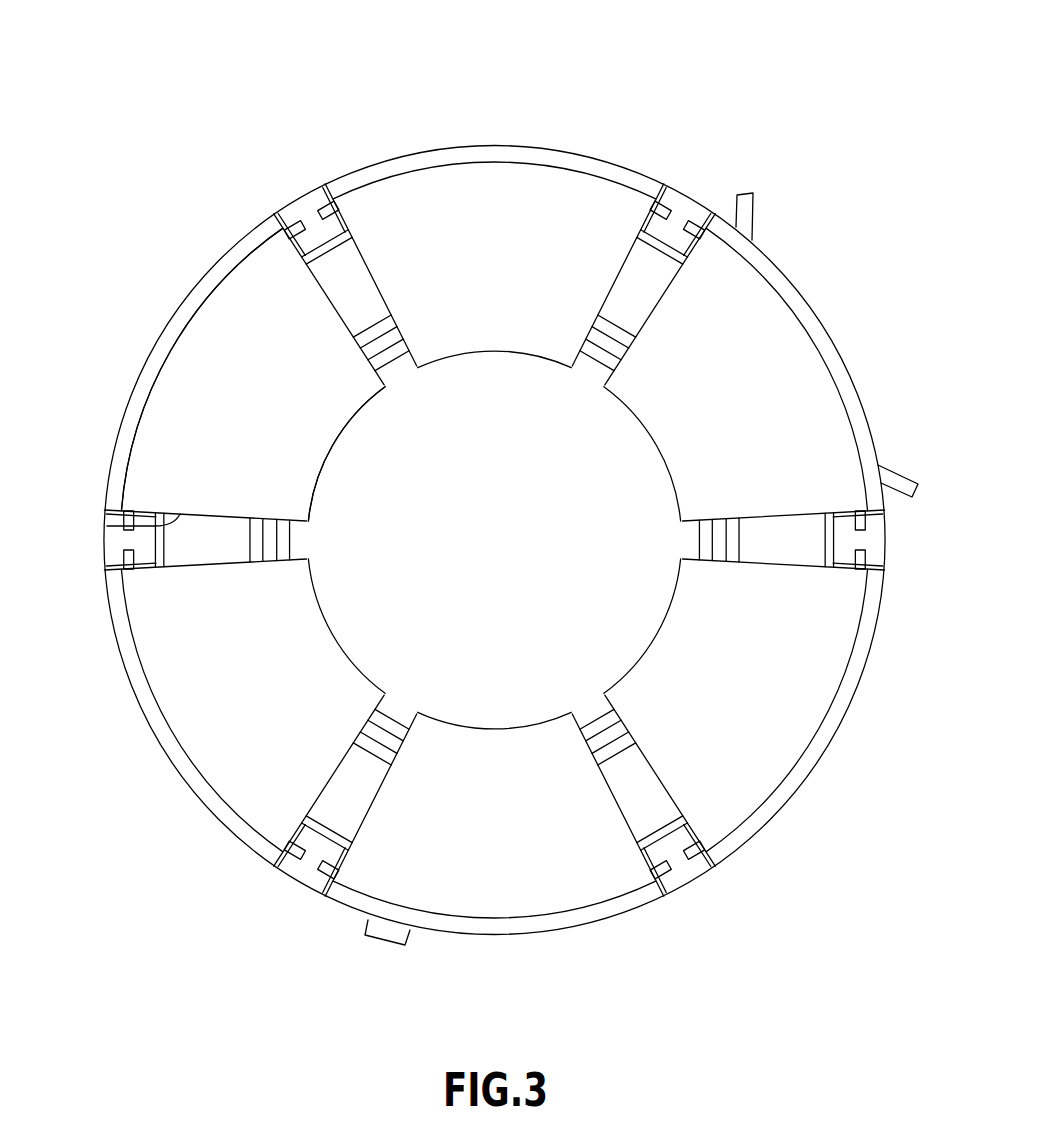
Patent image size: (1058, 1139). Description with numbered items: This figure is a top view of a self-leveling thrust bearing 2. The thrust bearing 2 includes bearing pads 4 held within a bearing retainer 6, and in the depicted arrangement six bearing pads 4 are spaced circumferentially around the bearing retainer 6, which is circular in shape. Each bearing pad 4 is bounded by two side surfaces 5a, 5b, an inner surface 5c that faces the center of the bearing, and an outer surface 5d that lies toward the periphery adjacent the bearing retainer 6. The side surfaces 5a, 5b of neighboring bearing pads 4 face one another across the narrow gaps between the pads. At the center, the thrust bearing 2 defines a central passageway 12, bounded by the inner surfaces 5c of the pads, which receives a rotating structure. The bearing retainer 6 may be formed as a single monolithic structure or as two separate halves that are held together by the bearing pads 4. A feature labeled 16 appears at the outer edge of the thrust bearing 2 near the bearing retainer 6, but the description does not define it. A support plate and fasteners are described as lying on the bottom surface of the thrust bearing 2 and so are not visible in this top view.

The self-leveling thrust bearing 2 is at (597, 69).
The bearing pad 4 is at (183, 394).
The side surface 5a is at (320, 278).
The side surface 5b is at (168, 541).
The inner surface 5c is at (338, 438).
The outer surface 5d is at (240, 258).
The bearing retainer 6 is at (338, 807).
The central passageway 12 is at (512, 550).
The joint portion 16 is at (90, 560).